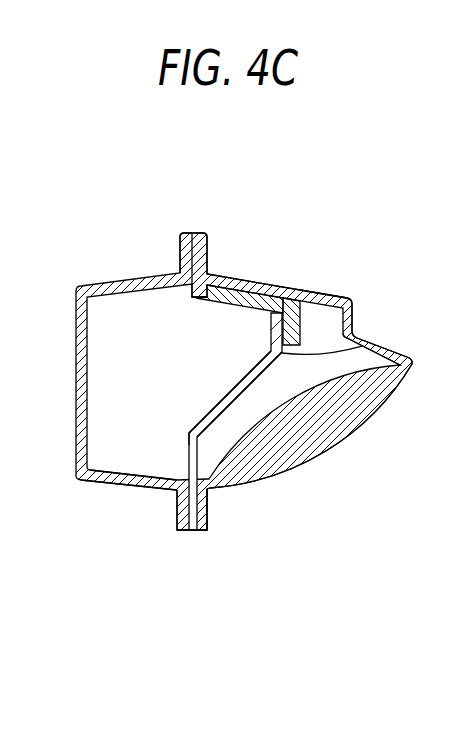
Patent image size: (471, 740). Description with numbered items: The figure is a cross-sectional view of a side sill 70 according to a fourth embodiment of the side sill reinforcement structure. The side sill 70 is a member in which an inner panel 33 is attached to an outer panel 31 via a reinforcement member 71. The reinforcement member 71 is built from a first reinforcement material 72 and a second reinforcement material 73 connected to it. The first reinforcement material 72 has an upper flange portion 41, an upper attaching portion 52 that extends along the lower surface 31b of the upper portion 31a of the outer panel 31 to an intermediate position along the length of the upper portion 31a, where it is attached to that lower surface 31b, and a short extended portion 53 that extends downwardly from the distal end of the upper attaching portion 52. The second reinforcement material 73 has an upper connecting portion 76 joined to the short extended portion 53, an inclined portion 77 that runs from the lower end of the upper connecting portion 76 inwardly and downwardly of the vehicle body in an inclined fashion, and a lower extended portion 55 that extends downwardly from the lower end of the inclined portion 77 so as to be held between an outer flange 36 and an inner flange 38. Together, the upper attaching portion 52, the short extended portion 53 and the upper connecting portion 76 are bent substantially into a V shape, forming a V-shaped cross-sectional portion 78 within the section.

The side sill 70 is at (139, 268).
The upper flange portion 41 is at (191, 232).
The lower surface 31b is at (232, 283).
The upper portion 31a is at (311, 289).
The short extended portion 53 is at (301, 322).
The upper connecting portion 76 is at (343, 353).
The upper attaching portion 52 is at (233, 306).
The first reinforcement material 72 is at (190, 305).
The lower extended portion 55 is at (189, 457).
The V-shaped cross-sectional portion 78 is at (226, 380).
The second reinforcement material 73 is at (200, 417).
The reinforcement member 71 is at (276, 381).
The inclined portion 77 is at (233, 408).
The inner panel 33 is at (112, 491).
The inner flange 38 is at (177, 508).
The outer flange 36 is at (208, 512).
The outer panel 31 is at (313, 466).